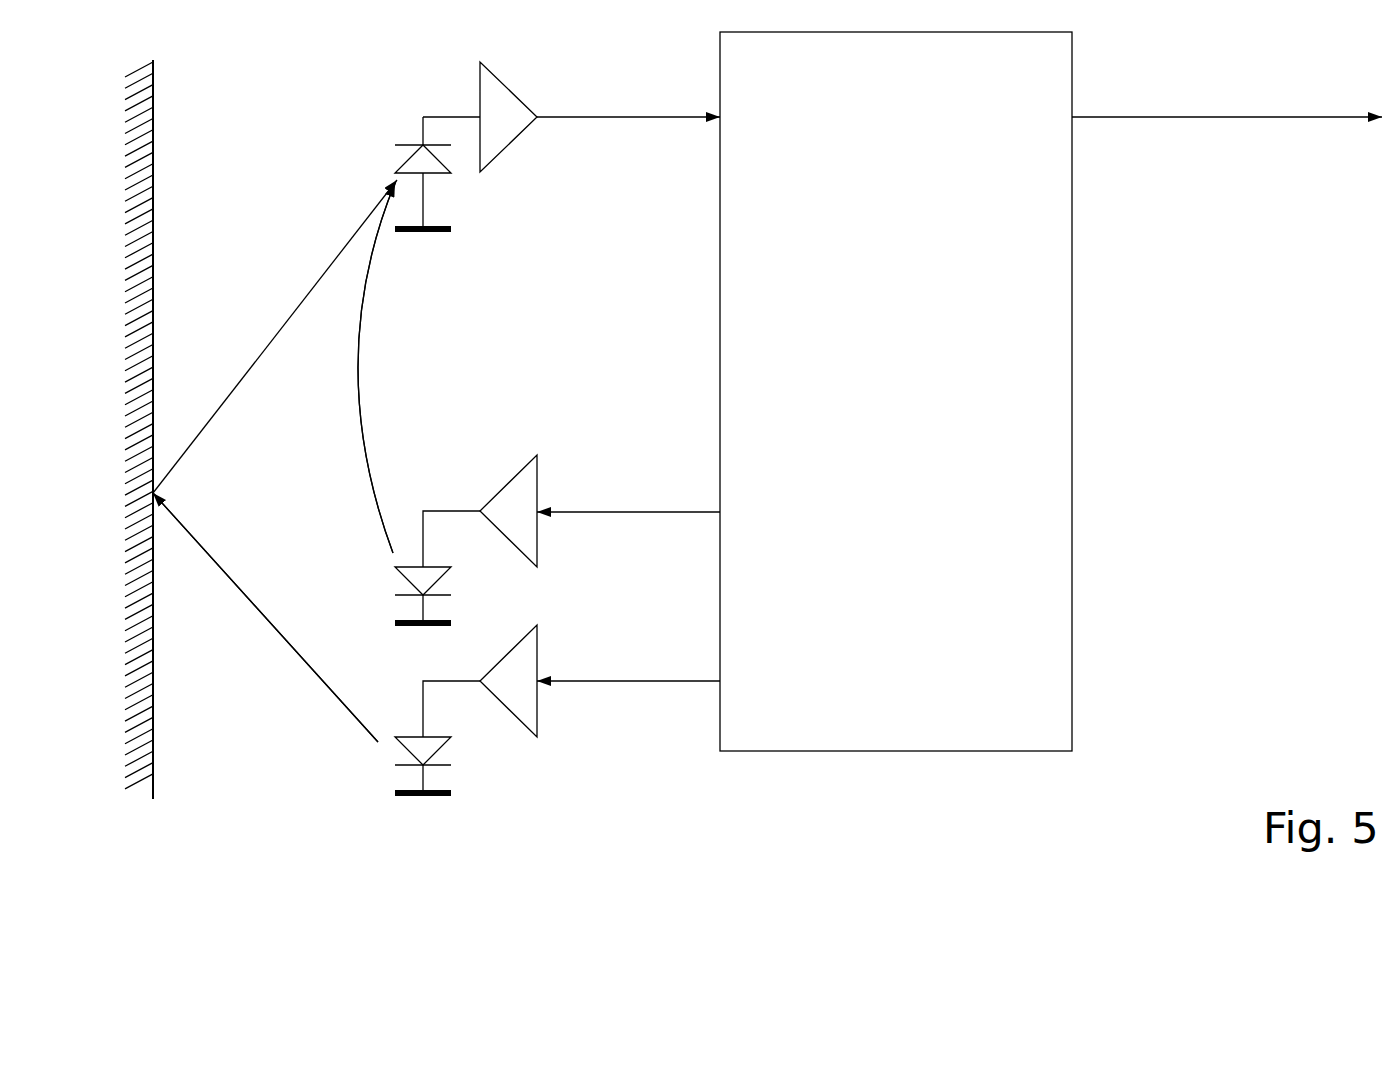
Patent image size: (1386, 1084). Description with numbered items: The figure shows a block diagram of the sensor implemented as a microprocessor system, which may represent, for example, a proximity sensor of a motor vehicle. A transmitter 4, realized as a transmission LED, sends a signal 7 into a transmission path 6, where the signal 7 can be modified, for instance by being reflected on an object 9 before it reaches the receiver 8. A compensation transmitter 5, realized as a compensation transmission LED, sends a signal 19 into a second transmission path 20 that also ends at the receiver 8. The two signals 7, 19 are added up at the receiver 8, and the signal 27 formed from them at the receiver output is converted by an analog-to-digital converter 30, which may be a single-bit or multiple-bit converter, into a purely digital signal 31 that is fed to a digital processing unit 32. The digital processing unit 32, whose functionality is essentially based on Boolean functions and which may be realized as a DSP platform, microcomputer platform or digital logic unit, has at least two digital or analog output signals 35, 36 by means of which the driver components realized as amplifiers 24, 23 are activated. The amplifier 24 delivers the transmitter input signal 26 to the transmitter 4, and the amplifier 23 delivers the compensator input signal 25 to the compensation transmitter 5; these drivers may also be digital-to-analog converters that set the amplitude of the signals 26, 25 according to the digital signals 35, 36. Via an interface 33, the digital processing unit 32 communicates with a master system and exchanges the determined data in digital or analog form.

The transmitter 4 is at (432, 757).
The compensation transmitter 5 is at (432, 587).
The transmission path 6 is at (271, 312).
The signal 7 is at (265, 617).
The receiver 8 is at (422, 160).
The object 9 is at (149, 429).
The signal 19 is at (352, 438).
The transmission path 20 is at (376, 368).
The amplifier 23 is at (508, 511).
The amplifier 24 is at (508, 681).
The compensator input signal 25 is at (451, 522).
The transmitter input signal 26 is at (451, 692).
The signal 27 is at (451, 99).
The analog-to-digital converter 30 is at (507, 103).
The digital signal 31 is at (628, 102).
The digital processing unit 32 is at (896, 391).
The interface 33 is at (1227, 101).
The output signal 35 is at (628, 496).
The output signal 36 is at (628, 665).